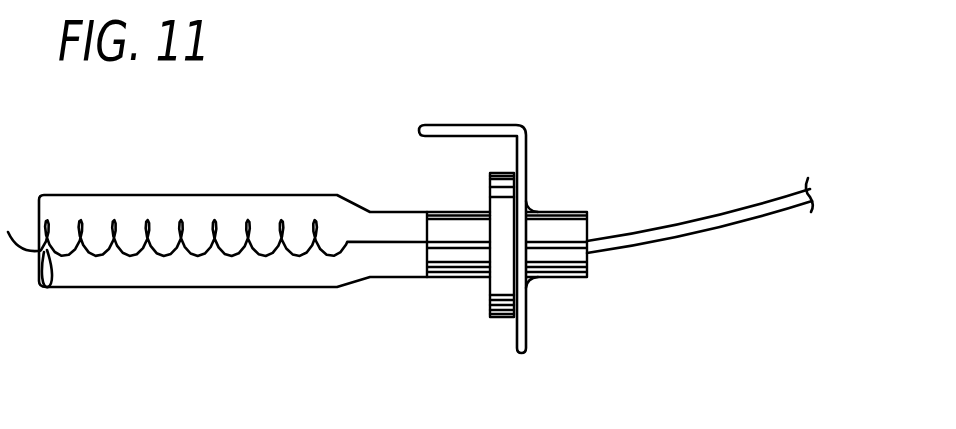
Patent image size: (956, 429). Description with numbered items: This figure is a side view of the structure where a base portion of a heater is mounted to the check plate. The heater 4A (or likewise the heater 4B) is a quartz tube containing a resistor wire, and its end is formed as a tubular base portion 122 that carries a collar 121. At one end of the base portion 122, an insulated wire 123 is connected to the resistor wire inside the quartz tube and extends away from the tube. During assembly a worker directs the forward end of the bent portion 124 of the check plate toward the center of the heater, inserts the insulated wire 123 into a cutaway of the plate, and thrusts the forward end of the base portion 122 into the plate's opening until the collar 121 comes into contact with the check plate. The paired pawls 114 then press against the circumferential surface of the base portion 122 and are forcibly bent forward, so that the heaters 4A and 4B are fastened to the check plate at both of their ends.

The heater 4A is at (217, 209).
The heater 4B is at (168, 195).
The pawl 114 is at (528, 208).
The collar 121 is at (493, 292).
The base portion 122 is at (576, 273).
The insulated wire 123 is at (692, 227).
The bent portion 124 is at (447, 130).